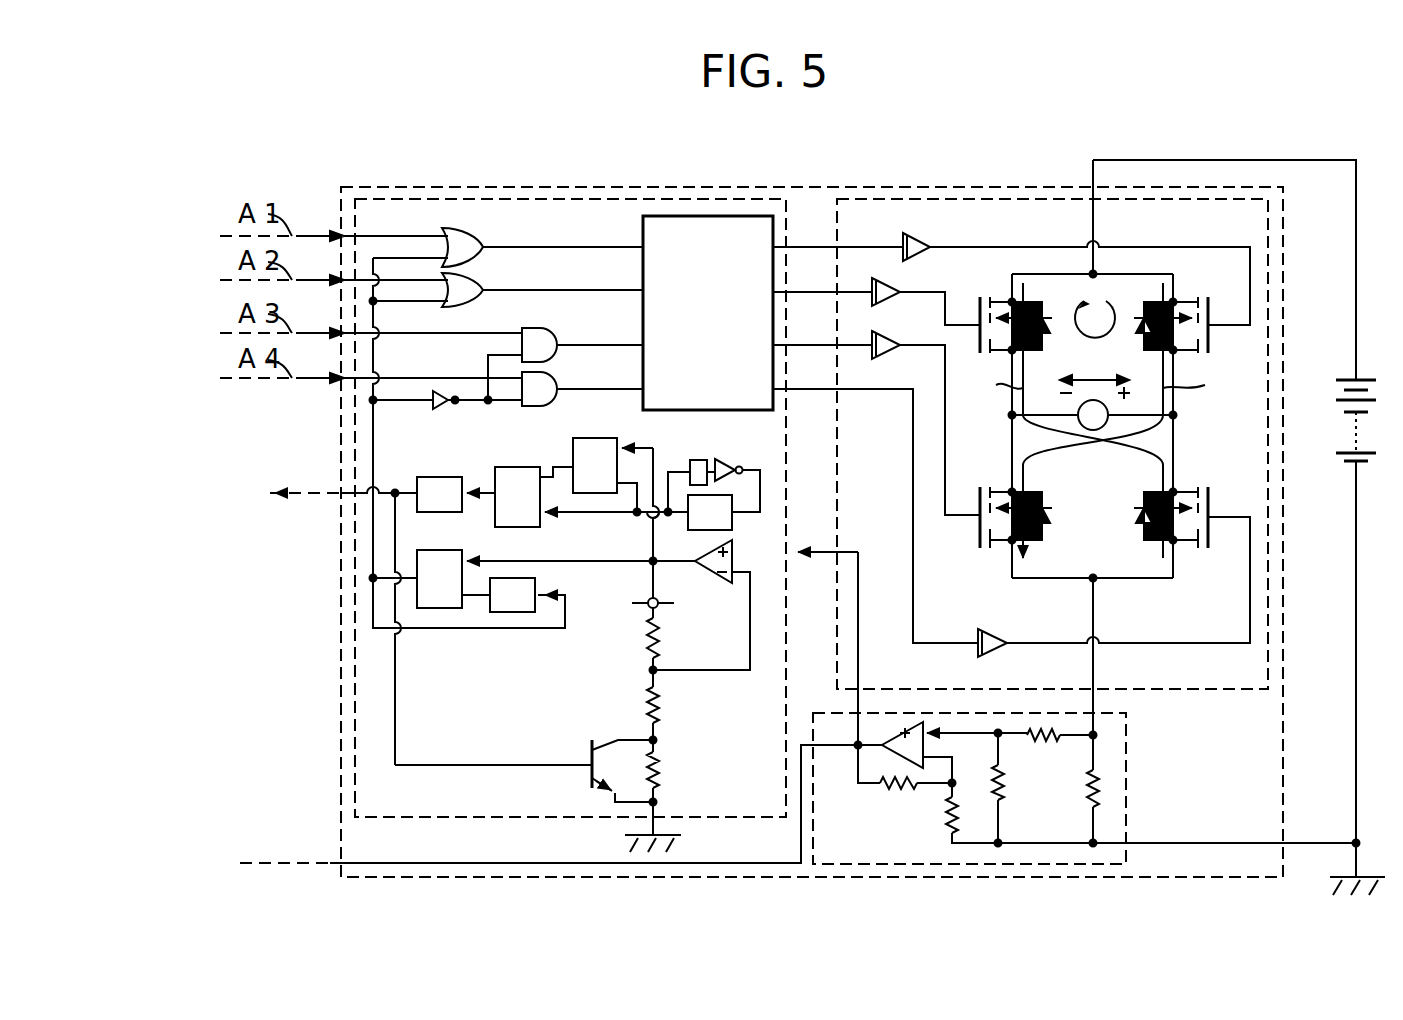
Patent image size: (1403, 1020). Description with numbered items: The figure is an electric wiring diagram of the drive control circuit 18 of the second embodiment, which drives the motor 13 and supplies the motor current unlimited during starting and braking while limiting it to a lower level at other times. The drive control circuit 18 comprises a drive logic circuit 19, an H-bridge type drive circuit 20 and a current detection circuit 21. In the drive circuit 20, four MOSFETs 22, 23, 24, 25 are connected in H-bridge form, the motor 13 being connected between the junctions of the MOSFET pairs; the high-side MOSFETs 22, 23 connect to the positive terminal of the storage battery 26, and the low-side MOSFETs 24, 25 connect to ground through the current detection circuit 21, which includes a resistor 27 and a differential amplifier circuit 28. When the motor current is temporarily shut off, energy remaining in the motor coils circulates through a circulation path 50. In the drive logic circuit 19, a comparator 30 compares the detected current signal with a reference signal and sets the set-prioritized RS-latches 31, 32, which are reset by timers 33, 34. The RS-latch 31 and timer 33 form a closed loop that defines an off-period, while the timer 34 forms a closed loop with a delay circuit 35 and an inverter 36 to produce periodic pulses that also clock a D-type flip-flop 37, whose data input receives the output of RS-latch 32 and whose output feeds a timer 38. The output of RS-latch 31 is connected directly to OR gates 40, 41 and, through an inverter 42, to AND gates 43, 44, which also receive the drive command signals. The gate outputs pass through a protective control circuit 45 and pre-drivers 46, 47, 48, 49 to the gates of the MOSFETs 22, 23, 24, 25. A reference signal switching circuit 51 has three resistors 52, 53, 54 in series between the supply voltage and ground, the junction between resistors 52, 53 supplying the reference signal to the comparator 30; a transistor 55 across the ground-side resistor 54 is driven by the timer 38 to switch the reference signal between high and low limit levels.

The motor 13 is at (1160, 436).
The drive control circuit 18 is at (360, 185).
The drive logic circuit 19 is at (705, 197).
The H-bridge type drive circuit 20 is at (930, 199).
The current detection circuit 21 is at (1128, 748).
The MOSFET 22 is at (1181, 297).
The MOSFET 23 is at (1007, 298).
The MOSFET 24 is at (1007, 488).
The MOSFET 25 is at (1179, 488).
The storage battery 26 is at (1360, 378).
The resistor 27 is at (1105, 787).
The differential amplifier circuit 28 is at (897, 796).
The comparator 30 is at (729, 585).
The RS-latch 31 is at (447, 550).
The RS-latch 32 is at (599, 438).
The timer 33 is at (536, 582).
The timer 34 is at (732, 517).
The delay circuit 35 is at (698, 460).
The inverter 36 is at (723, 460).
The D-type flip-flop 37 is at (520, 467).
The timer 38 is at (443, 477).
The OR gate 40 is at (483, 232).
The OR gate 41 is at (484, 277).
The inverter 42 is at (449, 412).
The AND gate 43 is at (558, 330).
The AND gate 44 is at (558, 378).
The protective control circuit 45 is at (641, 226).
The pre-driver 46 is at (931, 239).
The pre-driver 47 is at (901, 287).
The pre-driver 48 is at (889, 335).
The pre-driver 49 is at (994, 641).
The circulation path 50 is at (1102, 336).
The reference signal switching circuit 51 is at (558, 705).
The resistor 52 is at (647, 648).
The resistor 53 is at (662, 704).
The resistor 54 is at (662, 769).
The transistor 55 is at (590, 752).